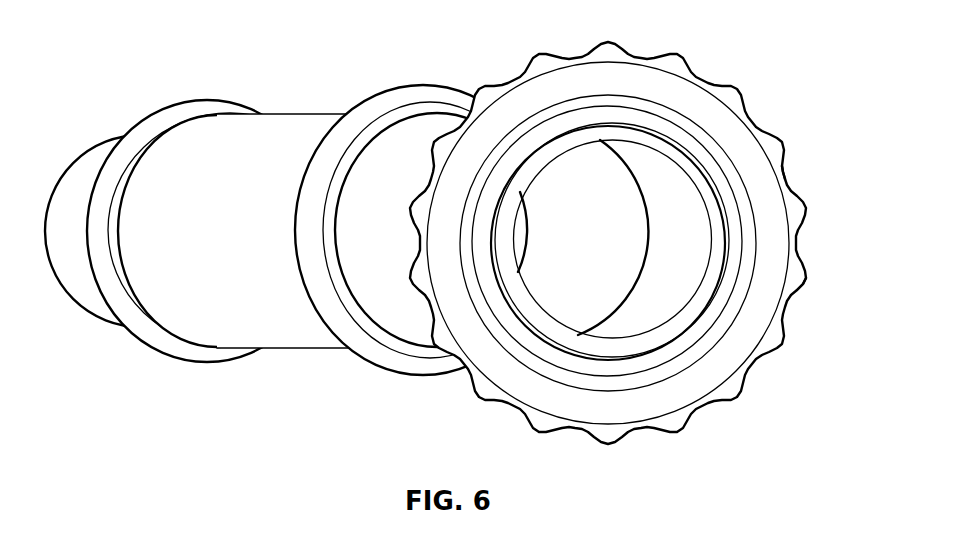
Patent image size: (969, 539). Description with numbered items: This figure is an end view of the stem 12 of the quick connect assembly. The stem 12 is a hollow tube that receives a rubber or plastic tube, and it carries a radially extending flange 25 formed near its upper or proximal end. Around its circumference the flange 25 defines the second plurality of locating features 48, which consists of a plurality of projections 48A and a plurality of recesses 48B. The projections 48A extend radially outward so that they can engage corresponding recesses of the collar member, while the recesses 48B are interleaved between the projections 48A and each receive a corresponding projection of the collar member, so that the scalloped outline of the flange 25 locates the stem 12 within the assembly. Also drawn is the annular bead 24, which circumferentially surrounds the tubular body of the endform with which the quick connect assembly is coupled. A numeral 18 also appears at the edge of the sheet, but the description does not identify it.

The stem 12 is at (405, 56).
The annular bead 24 is at (352, 352).
The flange 25 is at (649, 231).
The second plurality of locating features 48 is at (691, 46).
The projections 48A is at (803, 288).
The recesses 48B is at (783, 173).
The hose 18 is at (58, 537).